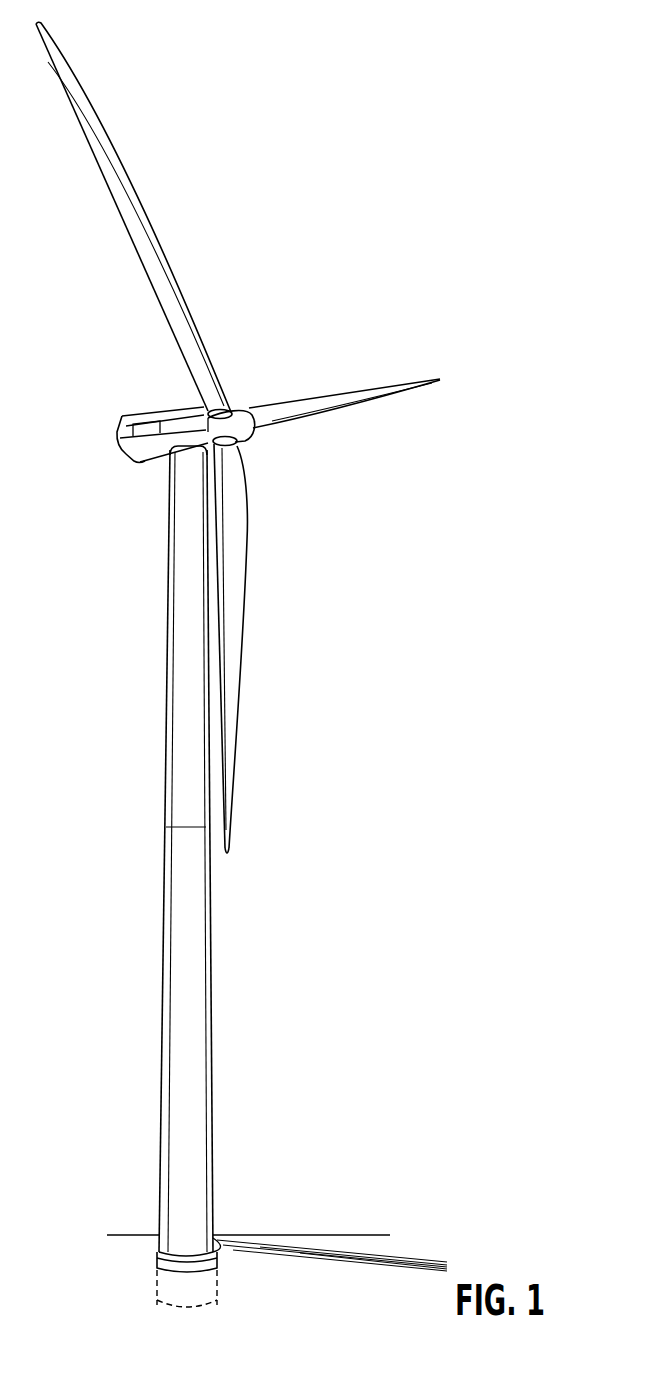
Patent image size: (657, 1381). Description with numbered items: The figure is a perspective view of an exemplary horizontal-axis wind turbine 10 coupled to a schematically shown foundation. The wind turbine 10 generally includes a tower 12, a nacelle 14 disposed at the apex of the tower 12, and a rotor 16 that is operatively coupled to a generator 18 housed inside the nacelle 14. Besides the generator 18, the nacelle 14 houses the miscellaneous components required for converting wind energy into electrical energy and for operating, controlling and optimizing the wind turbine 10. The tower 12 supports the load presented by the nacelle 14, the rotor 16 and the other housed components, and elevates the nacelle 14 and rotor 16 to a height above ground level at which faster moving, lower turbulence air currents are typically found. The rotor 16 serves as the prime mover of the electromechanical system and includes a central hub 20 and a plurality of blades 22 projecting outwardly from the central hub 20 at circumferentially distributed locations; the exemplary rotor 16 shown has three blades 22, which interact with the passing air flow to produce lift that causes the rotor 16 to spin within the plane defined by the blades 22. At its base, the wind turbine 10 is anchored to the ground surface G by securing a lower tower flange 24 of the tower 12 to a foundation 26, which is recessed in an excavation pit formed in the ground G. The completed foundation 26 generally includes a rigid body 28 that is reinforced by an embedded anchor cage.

The wind turbine 10 is at (374, 189).
The tower 12 is at (167, 738).
The nacelle 14 is at (147, 414).
The rotor 16 is at (240, 405).
The generator 18 is at (119, 432).
The central hub 20 is at (250, 426).
The blades 22 is at (80, 118).
The lower tower flange 24 is at (163, 1252).
The foundation 26 is at (218, 1287).
The rigid body 28 is at (214, 1252).
The ground surface G is at (319, 1235).